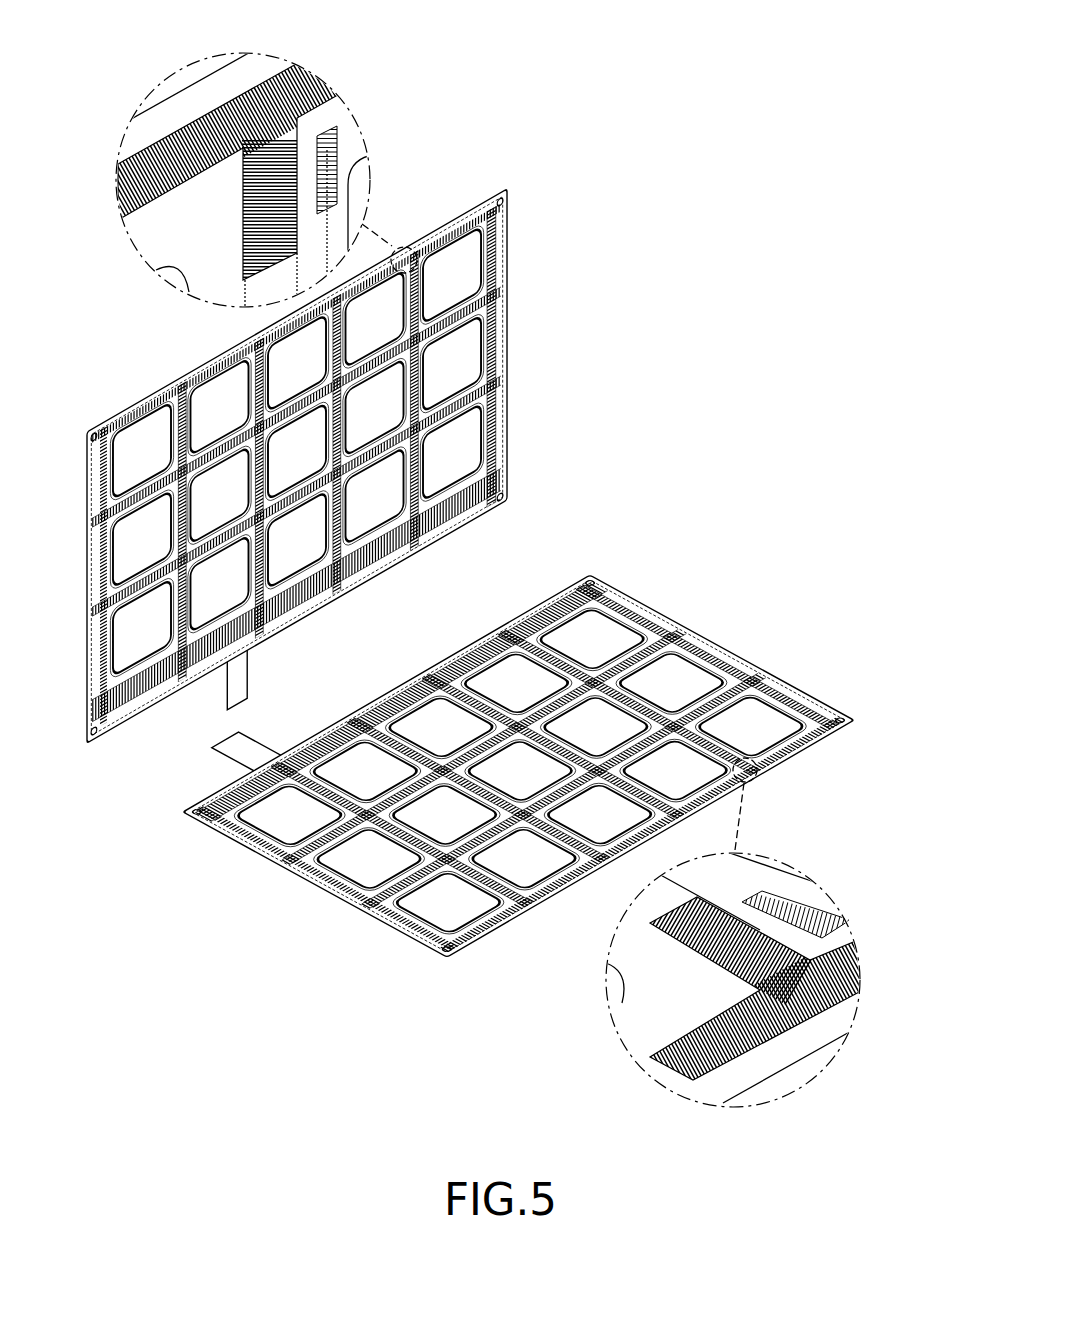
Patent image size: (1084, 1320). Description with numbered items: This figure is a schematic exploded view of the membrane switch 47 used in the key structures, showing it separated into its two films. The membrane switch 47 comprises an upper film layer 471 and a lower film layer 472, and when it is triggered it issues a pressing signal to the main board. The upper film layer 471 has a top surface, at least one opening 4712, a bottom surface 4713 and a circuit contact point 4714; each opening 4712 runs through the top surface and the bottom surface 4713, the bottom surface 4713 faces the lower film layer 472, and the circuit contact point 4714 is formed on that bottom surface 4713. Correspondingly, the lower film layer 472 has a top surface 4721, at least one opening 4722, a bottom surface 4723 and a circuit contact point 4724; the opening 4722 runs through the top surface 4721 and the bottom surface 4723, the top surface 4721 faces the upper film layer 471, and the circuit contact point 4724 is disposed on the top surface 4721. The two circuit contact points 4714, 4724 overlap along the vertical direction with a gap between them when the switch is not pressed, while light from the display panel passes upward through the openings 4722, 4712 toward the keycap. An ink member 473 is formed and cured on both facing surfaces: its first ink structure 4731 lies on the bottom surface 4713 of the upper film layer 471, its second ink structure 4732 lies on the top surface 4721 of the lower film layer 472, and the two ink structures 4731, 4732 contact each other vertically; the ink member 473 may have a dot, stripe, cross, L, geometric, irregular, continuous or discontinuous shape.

The membrane switch 47 is at (731, 194).
The upper film layer 471 is at (510, 268).
The opening 4712 is at (368, 184).
The bottom surface 4713 is at (265, 58).
The circuit contact point 4714 is at (343, 128).
The lower film layer 472 is at (732, 637).
The top surface 4721 is at (642, 600).
The opening 4722 is at (585, 640).
The bottom surface 4723 is at (298, 888).
The circuit contact point 4724 is at (835, 905).
The ink member 473 is at (776, 398).
The first ink structure 4731 is at (207, 130).
The second ink structure 4732 is at (871, 1048).